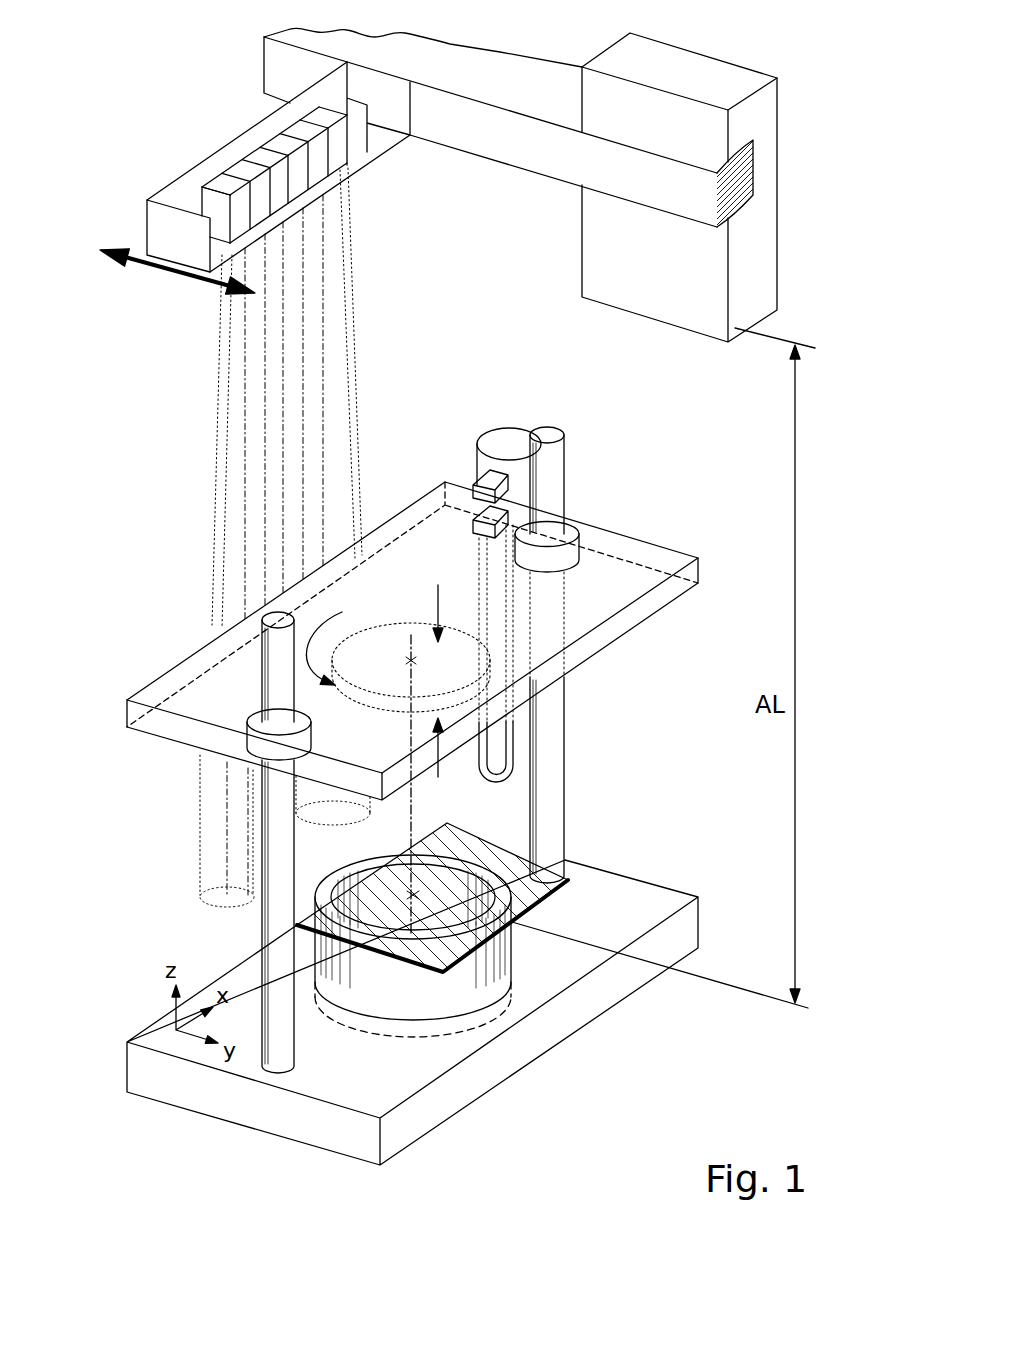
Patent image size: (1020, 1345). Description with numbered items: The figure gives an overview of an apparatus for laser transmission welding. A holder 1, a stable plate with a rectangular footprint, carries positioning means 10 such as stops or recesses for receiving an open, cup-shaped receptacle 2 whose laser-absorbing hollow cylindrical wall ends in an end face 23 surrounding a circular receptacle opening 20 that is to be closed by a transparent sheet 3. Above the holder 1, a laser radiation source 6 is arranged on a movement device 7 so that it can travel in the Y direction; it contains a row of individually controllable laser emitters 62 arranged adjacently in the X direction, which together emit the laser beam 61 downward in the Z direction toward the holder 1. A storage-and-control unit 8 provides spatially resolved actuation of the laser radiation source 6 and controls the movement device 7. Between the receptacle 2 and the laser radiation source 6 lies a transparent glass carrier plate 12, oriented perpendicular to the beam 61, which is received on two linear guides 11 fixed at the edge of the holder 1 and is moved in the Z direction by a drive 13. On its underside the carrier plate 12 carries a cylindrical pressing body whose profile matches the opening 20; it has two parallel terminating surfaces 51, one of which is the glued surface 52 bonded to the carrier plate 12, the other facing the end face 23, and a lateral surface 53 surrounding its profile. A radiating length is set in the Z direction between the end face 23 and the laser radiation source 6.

The holder 1 is at (158, 1037).
The receptacle 2 is at (483, 970).
The sheet 3 is at (530, 882).
The laser radiation source 6 is at (163, 233).
The movement device 7 is at (503, 138).
The storage-and-control unit 8 is at (633, 248).
The positioning means 10 is at (470, 1018).
The linear guides 11 is at (550, 497).
The carrier plate 12 is at (182, 693).
The drive 13 is at (508, 437).
The receptacle opening 20 is at (448, 880).
The end face 23 is at (530, 912).
The terminating surface 51 is at (440, 762).
The glued surface 52 is at (440, 600).
The lateral surface 53 is at (338, 639).
The laser beam 61 is at (188, 492).
The laser emitters 62 is at (245, 172).